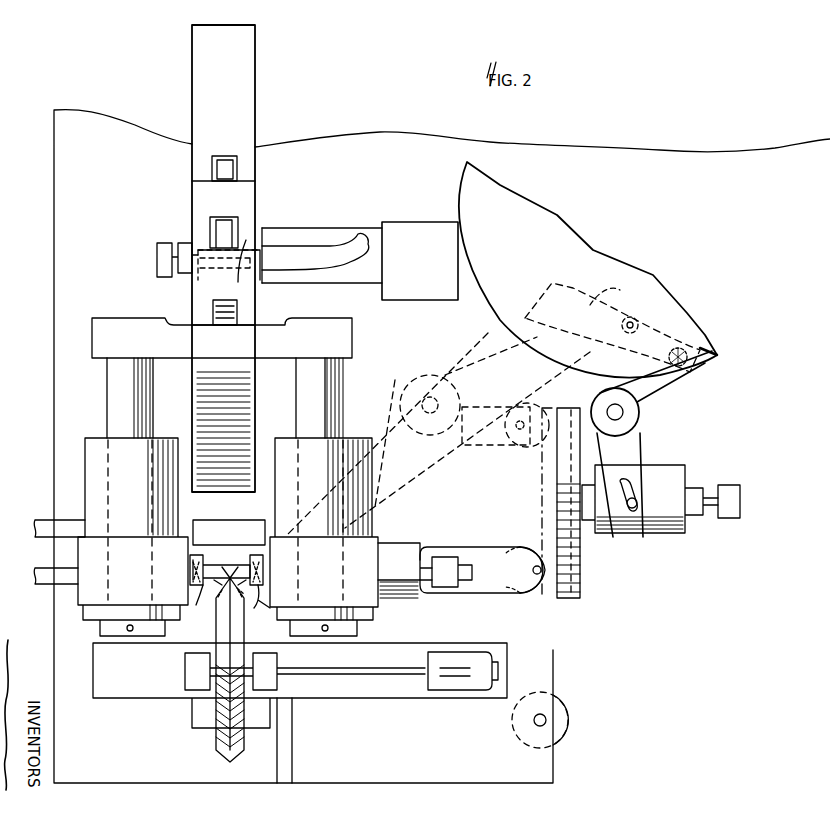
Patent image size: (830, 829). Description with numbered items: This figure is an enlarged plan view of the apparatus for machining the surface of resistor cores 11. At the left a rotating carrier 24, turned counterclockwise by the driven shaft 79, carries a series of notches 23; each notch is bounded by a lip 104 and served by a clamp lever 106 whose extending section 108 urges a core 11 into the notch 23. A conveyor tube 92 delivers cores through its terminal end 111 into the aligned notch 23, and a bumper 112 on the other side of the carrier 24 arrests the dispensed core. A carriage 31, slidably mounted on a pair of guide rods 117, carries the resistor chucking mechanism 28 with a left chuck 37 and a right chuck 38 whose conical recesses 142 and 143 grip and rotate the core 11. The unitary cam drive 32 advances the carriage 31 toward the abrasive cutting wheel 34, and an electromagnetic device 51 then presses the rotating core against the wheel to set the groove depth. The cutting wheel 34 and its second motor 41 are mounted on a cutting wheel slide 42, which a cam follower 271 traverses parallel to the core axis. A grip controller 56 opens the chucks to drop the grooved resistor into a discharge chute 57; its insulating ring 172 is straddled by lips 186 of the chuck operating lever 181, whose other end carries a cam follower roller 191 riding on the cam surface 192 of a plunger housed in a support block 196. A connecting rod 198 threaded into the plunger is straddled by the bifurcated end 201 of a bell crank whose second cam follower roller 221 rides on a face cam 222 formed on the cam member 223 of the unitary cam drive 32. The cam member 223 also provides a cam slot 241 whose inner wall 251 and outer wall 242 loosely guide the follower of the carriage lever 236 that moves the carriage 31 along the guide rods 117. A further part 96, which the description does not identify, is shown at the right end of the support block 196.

The carrier 24 is at (252, 113).
The extending section 108 is at (226, 172).
The clamp lever 106 is at (225, 154).
The bumper 112 is at (156, 256).
The lip 104 is at (236, 258).
The notch 23 is at (246, 245).
The terminal end 111 is at (262, 258).
The driven shaft 79 is at (352, 280).
The conveyor tube 92 is at (358, 236).
The guide rods 117 is at (118, 386).
The carriage 31 is at (196, 508).
The second recess 143 is at (324, 537).
The resistor chucking mechanism 28 is at (75, 596).
The discharge chute 57 is at (240, 530).
The first conical recess 142 is at (190, 568).
The resistor core 11 is at (238, 576).
The left chuck 37 is at (219, 593).
The right chuck 38 is at (266, 611).
The abrasive cutting wheel 34 is at (215, 740).
The electromagnetic device 51 is at (210, 656).
The cutting wheel slide 42 is at (372, 692).
The second motor 41 is at (452, 688).
The cam follower 271 is at (572, 718).
The lips 186 is at (422, 546).
The grip controller 56 is at (461, 517).
The insulating ring 172 is at (445, 564).
The chuck operating lever 181 is at (480, 606).
The cam follower roller 191 is at (535, 604).
The cam surface 192 is at (560, 484).
The carriage lever 236 is at (423, 392).
The unitary cam drive 32 is at (570, 303).
The inner wall 251 is at (590, 300).
The cam slot 241 is at (703, 303).
The outer wall 242 is at (662, 302).
The face cam 222 is at (700, 350).
The cam member 223 is at (718, 364).
The second cam follower roller 221 is at (651, 444).
The bifurcated end 201 is at (634, 512).
The support block 196 is at (688, 535).
The connecting rod 198 is at (650, 540).
The knob 96 is at (740, 500).